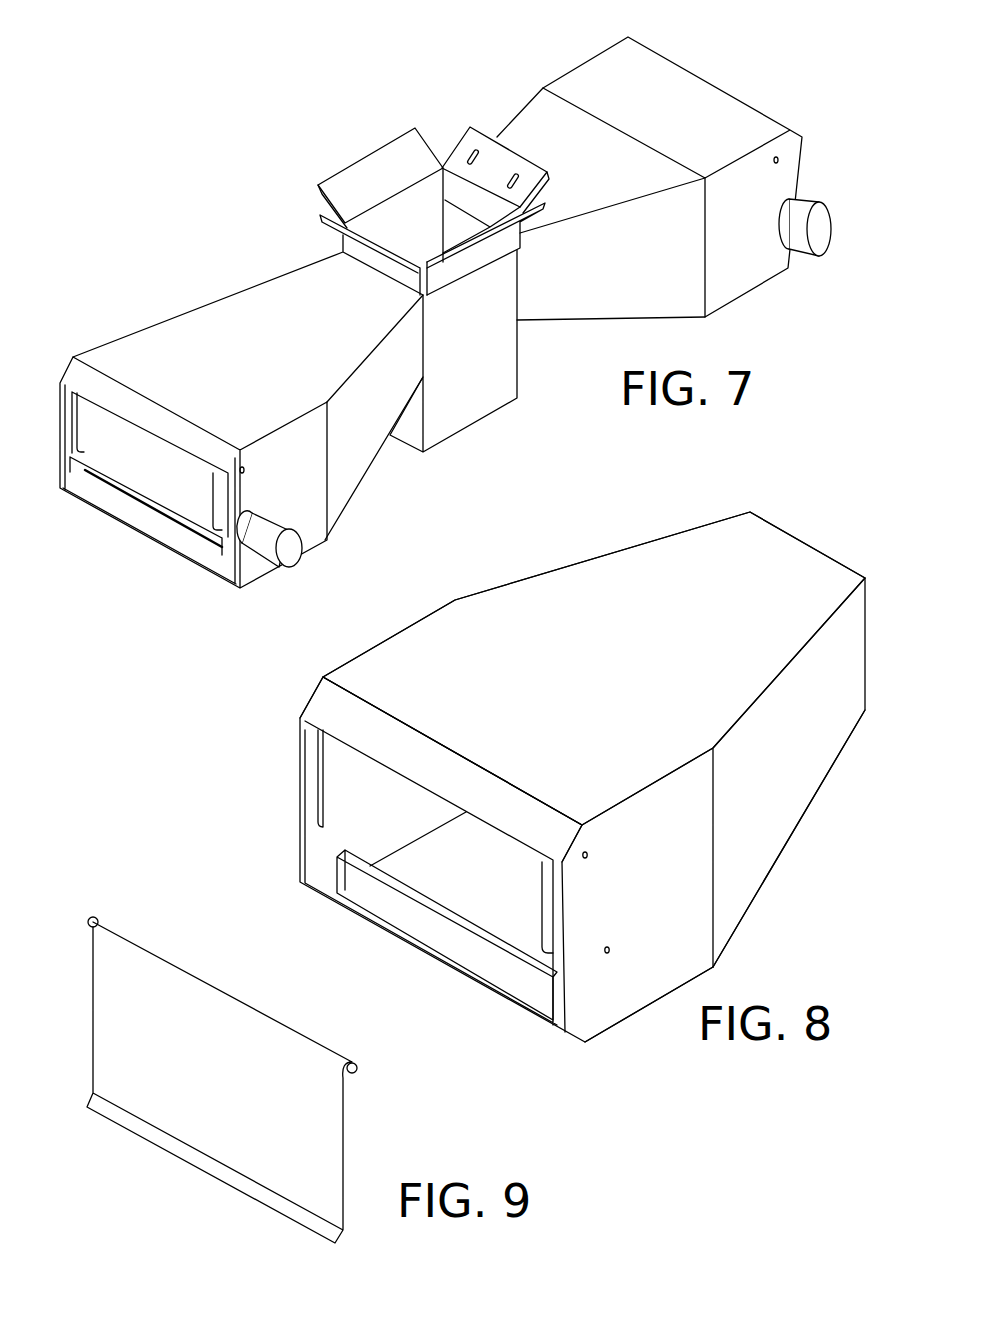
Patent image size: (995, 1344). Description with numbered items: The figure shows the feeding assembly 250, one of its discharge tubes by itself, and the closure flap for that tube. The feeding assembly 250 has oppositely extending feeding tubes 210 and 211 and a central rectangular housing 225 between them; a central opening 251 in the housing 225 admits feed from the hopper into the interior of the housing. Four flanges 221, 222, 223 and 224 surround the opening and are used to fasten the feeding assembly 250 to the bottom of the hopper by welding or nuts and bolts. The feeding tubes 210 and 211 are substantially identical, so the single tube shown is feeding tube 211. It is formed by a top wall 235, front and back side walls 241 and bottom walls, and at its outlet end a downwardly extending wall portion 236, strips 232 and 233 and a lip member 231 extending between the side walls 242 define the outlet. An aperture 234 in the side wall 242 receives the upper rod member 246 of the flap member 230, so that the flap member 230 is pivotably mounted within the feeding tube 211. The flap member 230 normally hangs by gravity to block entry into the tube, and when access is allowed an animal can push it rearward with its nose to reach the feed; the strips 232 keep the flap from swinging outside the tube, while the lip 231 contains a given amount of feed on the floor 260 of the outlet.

In FIG. 7, the feeding tube 210 is at (705, 82).
In FIG. 7, the feeding tube 211 is at (140, 317).
In FIG. 8, the feeding tube 211 is at (533, 577).
In FIG. 7, the flange 221 is at (460, 163).
In FIG. 7, the flange 222 is at (326, 229).
In FIG. 7, the flange 223 is at (378, 160).
In FIG. 7, the flange 224 is at (505, 233).
In FIG. 7, the central rectangular housing 225 is at (473, 383).
In FIG. 7, the feeding assembly 250 is at (283, 180).
In FIG. 7, the central opening 251 is at (412, 223).
In FIG. 9, the flap member 230 is at (198, 1080).
In FIG. 8, the lip member 231 is at (432, 932).
In FIG. 8, the strip 232 is at (312, 795).
In FIG. 8, the strip 233 is at (550, 905).
In FIG. 8, the aperture 234 is at (590, 853).
In FIG. 8, the top wall 235 is at (652, 676).
In FIG. 8, the downwardly extending wall portion 236 is at (350, 717).
In FIG. 8, the side wall 241 is at (763, 793).
In FIG. 8, the side wall 242 is at (713, 967).
In FIG. 9, the upper rod member 246 is at (90, 918).
In FIG. 8, the floor 260 is at (474, 861).